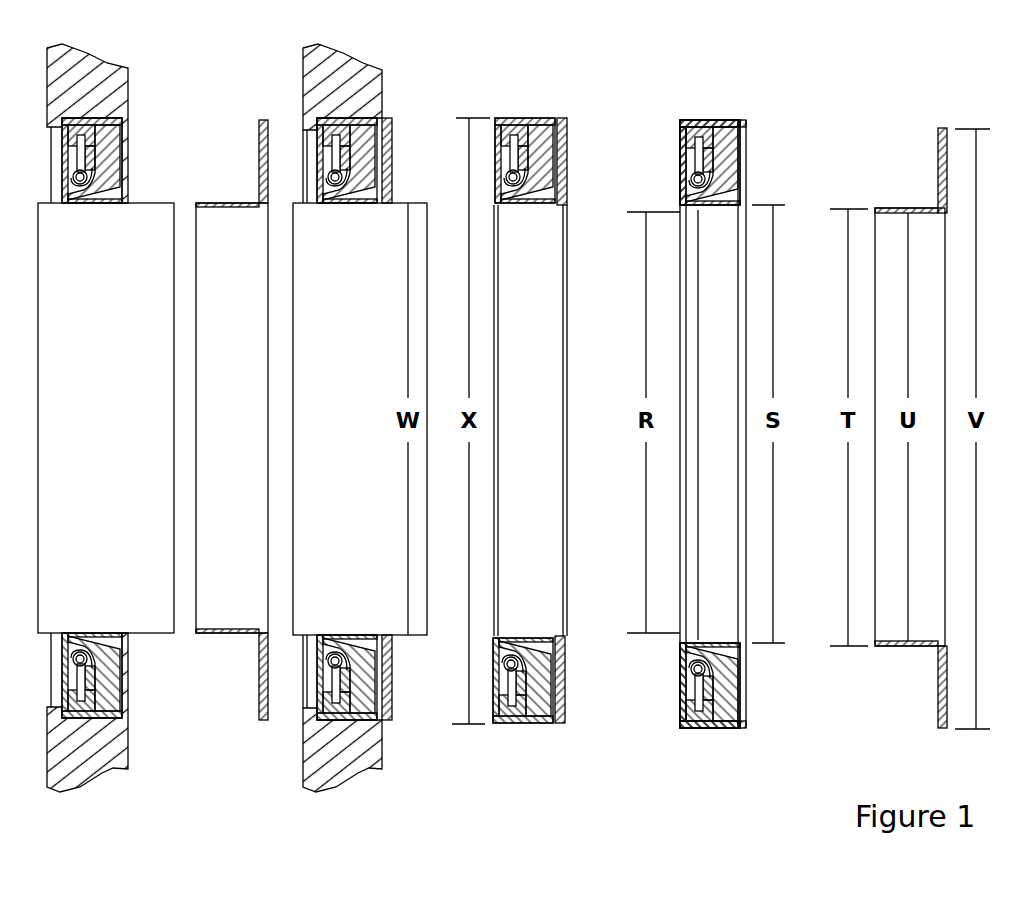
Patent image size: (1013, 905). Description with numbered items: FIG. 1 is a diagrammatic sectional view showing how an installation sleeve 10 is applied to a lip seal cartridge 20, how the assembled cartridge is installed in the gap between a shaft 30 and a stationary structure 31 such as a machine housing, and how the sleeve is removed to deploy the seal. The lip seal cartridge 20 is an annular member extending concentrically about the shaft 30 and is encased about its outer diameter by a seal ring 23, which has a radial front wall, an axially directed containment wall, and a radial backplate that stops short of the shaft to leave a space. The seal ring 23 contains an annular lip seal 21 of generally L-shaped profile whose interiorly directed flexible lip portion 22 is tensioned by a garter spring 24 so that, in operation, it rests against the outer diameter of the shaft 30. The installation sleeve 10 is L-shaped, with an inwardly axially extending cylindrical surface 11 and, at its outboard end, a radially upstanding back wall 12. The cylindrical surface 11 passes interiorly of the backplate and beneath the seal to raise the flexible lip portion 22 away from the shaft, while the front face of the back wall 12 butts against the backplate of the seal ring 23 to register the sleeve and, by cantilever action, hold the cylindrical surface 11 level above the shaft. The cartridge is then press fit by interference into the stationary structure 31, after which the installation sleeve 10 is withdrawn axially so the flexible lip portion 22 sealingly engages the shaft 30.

The installation sleeve 10 is at (241, 188).
The cylindrical surface 11 is at (882, 208).
The back wall 12 is at (937, 140).
The lip seal cartridge 20 is at (672, 145).
The lip seal 21 is at (728, 148).
The flexible lip portion 22 is at (83, 633).
The seal ring 23 is at (140, 140).
The garter spring 24 is at (512, 676).
The shaft 30 is at (128, 423).
The stationary structure 31 is at (118, 82).